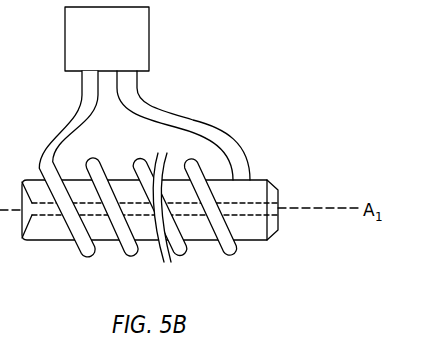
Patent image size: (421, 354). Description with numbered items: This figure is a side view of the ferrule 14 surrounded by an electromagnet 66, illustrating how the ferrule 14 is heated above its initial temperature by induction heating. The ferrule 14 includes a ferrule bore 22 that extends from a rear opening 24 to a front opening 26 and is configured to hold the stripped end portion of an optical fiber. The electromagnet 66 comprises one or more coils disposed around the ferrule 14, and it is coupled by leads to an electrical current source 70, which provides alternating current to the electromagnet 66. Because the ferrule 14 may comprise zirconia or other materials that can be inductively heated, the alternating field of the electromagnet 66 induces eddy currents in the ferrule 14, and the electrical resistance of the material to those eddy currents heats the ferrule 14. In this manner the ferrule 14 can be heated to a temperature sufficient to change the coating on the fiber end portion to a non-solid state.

The ferrule 14 is at (174, 229).
The ferrule bore 22 is at (247, 216).
The rear opening 24 is at (33, 216).
The front opening 26 is at (283, 213).
The electromagnet 66 is at (250, 120).
The electrical current source 70 is at (98, 48).